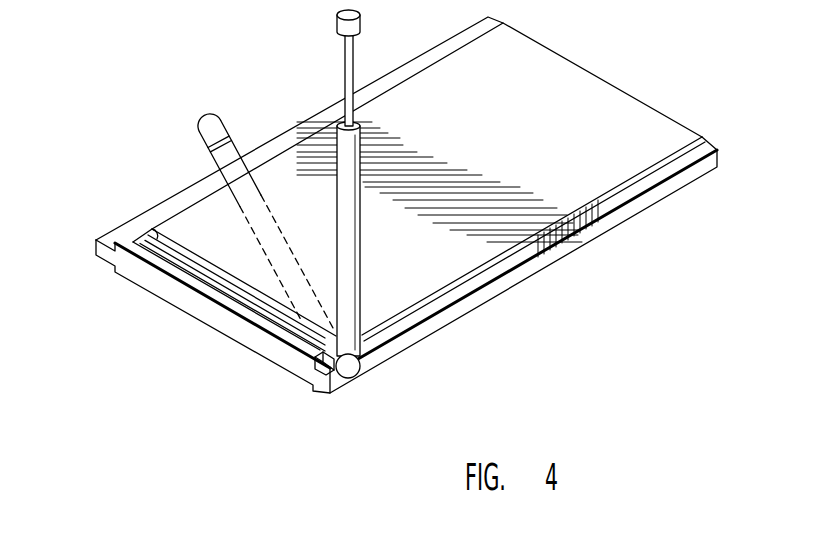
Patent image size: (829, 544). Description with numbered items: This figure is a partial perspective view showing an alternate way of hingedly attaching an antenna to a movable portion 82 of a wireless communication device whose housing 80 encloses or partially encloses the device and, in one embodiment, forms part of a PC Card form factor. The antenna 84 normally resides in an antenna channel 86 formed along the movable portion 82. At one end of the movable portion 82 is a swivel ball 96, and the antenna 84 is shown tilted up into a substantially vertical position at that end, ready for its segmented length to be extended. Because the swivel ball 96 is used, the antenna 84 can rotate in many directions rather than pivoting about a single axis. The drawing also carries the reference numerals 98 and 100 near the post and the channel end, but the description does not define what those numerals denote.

The housing 80 is at (580, 78).
The movable portion 82 is at (202, 210).
The antenna 84 is at (345, 63).
The antenna channel 86 is at (210, 278).
The swivel ball 96 is at (352, 370).
The post 98 is at (353, 313).
The channel 100 is at (153, 227).